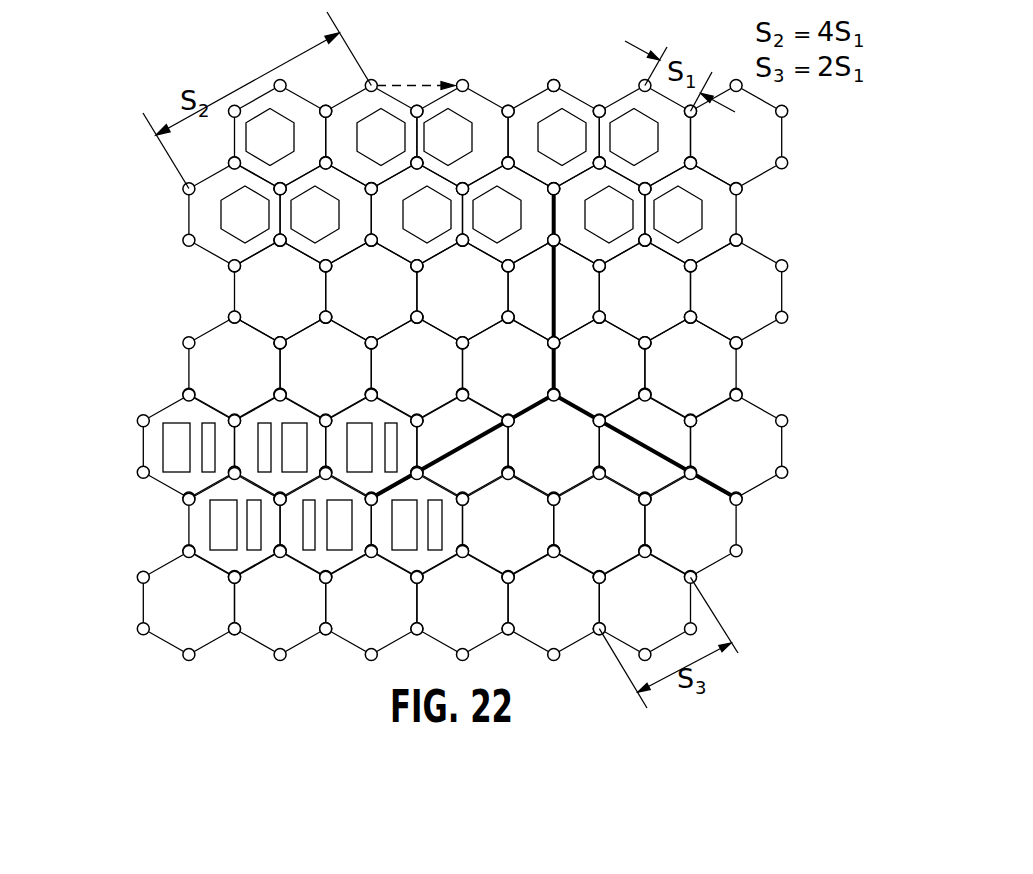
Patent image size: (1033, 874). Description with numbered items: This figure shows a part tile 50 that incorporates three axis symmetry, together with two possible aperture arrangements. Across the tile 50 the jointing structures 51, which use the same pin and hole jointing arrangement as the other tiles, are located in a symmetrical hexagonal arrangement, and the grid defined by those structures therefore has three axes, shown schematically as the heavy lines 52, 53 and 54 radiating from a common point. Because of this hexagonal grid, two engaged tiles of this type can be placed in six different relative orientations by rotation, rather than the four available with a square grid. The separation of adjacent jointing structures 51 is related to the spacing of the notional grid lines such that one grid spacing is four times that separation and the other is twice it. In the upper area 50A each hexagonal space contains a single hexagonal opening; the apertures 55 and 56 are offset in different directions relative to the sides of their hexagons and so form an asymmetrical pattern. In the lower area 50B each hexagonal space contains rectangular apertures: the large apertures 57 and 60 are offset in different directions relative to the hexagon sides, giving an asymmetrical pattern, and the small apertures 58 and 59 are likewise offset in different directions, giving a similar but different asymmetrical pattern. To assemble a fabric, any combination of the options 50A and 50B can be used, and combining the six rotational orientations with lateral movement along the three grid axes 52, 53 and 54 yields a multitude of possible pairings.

The part tile 50 is at (462, 345).
The area 50A is at (427, 176).
The area 50B is at (416, 465).
The jointing structures 51 is at (554, 79).
The grid axis 52 is at (558, 290).
The grid axis 53 is at (583, 407).
The grid axis 54 is at (536, 410).
The aperture 55 is at (285, 152).
The aperture 56 is at (398, 152).
The large aperture 57 is at (145, 426).
The small aperture 58 is at (207, 422).
The small aperture 59 is at (262, 423).
The large aperture 60 is at (293, 423).